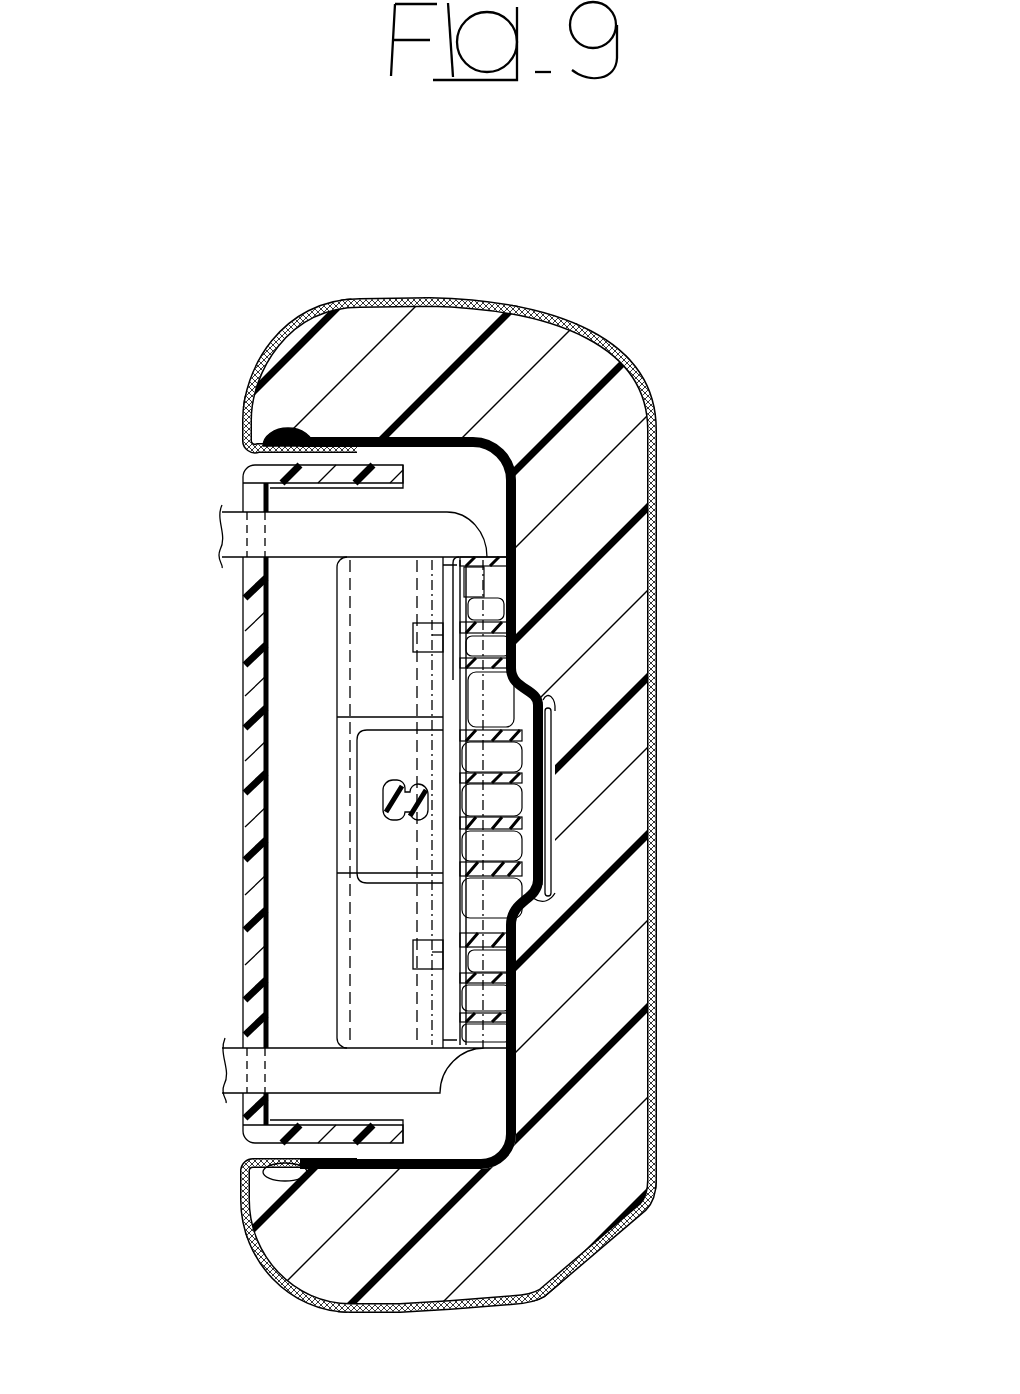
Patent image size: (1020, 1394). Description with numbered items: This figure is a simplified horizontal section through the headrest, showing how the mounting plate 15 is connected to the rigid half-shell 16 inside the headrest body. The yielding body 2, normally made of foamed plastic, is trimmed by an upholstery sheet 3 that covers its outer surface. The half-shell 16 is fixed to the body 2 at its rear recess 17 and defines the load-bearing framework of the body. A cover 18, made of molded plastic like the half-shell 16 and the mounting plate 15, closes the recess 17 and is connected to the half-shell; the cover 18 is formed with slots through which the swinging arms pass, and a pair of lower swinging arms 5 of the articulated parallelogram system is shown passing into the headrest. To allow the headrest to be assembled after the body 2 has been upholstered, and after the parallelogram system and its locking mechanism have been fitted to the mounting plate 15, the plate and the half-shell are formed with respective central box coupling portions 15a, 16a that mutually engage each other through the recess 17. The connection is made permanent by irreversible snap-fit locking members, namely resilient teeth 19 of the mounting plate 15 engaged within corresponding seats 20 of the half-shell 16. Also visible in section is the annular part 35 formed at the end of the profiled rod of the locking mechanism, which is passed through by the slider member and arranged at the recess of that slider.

The yielding body 2 is at (582, 337).
The upholstery sheet 3 is at (655, 473).
The lower swinging arms 5 is at (233, 523).
The mounting plate 15 is at (542, 886).
The central box coupling portion 15a is at (560, 790).
The rigid half-shell 16 is at (516, 496).
The central box coupling portion 16a is at (553, 737).
The rear recess 17 is at (253, 573).
The cover 18 is at (248, 703).
The resilient teeth 19 is at (517, 657).
The seats 20 is at (517, 620).
The annular part 35 is at (383, 800).